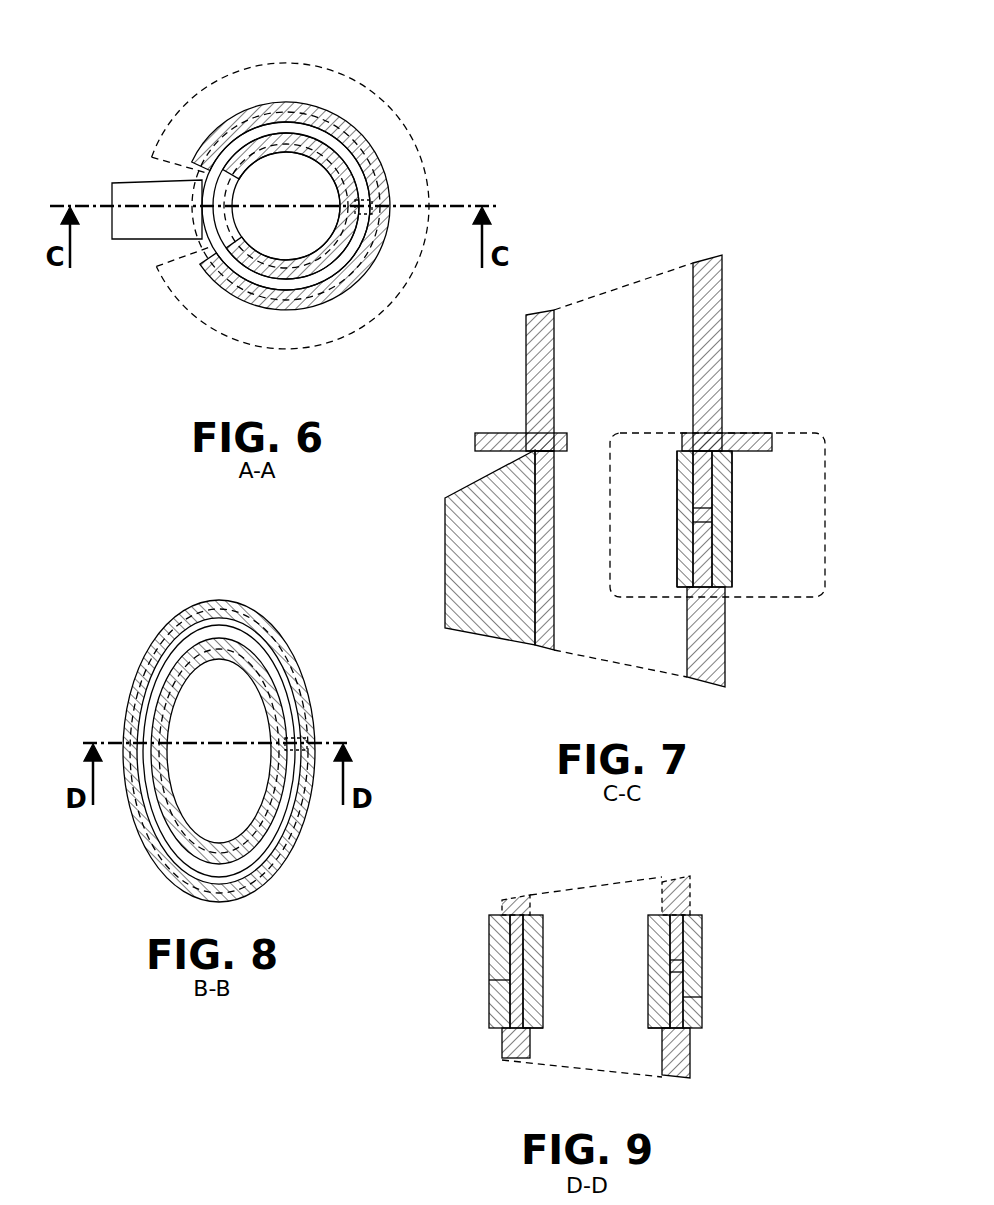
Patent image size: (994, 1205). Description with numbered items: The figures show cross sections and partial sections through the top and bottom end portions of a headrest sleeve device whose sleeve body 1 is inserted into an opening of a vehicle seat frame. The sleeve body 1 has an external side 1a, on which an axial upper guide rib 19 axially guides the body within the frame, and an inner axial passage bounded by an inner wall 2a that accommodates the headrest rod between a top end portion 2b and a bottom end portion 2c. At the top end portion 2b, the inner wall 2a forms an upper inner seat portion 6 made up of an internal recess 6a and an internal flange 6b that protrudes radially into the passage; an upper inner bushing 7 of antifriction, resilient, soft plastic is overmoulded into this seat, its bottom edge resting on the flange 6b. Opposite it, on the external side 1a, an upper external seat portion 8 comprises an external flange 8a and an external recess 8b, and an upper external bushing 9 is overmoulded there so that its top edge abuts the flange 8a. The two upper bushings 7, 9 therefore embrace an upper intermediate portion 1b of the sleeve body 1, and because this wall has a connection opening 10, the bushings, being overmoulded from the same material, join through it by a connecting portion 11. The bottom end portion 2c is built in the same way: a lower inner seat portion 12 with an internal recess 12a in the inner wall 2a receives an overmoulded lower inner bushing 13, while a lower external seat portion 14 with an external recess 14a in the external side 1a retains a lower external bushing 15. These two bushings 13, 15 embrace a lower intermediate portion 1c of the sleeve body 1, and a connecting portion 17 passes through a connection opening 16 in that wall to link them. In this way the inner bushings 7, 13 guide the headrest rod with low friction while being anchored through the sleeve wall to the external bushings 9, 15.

In FIG. 7, the sleeve body 1 is at (712, 648).
In FIG. 9, the sleeve body 1 is at (680, 888).
In FIG. 6, the external side 1a is at (208, 152).
In FIG. 7, the external side 1a is at (522, 382).
In FIG. 8, the external side 1a is at (150, 662).
In FIG. 9, the external side 1a is at (496, 901).
In FIG. 6, the upper intermediate portion 1b is at (317, 133).
In FIG. 7, the upper intermediate portion 1b is at (703, 545).
In FIG. 8, the lower intermediate portion 1c is at (292, 717).
In FIG. 9, the lower intermediate portion 1c is at (515, 942).
In FIG. 7, the inner wall 2a is at (556, 392).
In FIG. 8, the inner wall 2a is at (273, 798).
In FIG. 9, the inner wall 2a is at (534, 895).
In FIG. 6, the top end portion 2b is at (272, 227).
In FIG. 7, the top end portion 2b is at (622, 308).
In FIG. 8, the bottom end portion 2c is at (208, 778).
In FIG. 9, the bottom end portion 2c is at (596, 899).
In FIG. 7, the upper inner seat portion 6 is at (610, 437).
In FIG. 6, the internal recess 6a is at (347, 233).
In FIG. 7, the internal recess 6a is at (683, 474).
In FIG. 6, the internal flange 6b is at (250, 150).
In FIG. 7, the internal flange 6b is at (560, 435).
In FIG. 6, the upper inner bushing 7 is at (288, 270).
In FIG. 7, the upper inner bushing 7 is at (683, 552).
In FIG. 7, the upper external seat portion 8 is at (825, 437).
In FIG. 6, the external flange 8a is at (287, 74).
In FIG. 7, the external flange 8a is at (492, 432).
In FIG. 6, the external recess 8b is at (338, 280).
In FIG. 7, the external recess 8b is at (707, 492).
In FIG. 6, the upper external bushing 9 is at (370, 155).
In FIG. 7, the upper external bushing 9 is at (725, 570).
In FIG. 6, the connection opening 10 is at (368, 202).
In FIG. 7, the connection opening 10 is at (707, 520).
In FIG. 7, the connecting portion 11 is at (707, 510).
In FIG. 9, the lower inner seat portion 12 is at (523, 980).
In FIG. 8, the internal recess 12a is at (153, 722).
In FIG. 8, the lower inner bushing 13 is at (228, 655).
In FIG. 9, the lower inner bushing 13 is at (535, 1015).
In FIG. 9, the lower external seat portion 14 is at (417, 917).
In FIG. 8, the external recess 14a is at (278, 667).
In FIG. 9, the external recess 14a is at (512, 963).
In FIG. 8, the lower external bushing 15 is at (202, 612).
In FIG. 9, the lower external bushing 15 is at (493, 997).
In FIG. 9, the connection opening 16 is at (670, 958).
In FIG. 8, the connecting portion 17 is at (293, 739).
In FIG. 9, the connecting portion 17 is at (670, 971).
In FIG. 6, the axial upper guide rib 19 is at (130, 230).
In FIG. 7, the axial upper guide rib 19 is at (473, 600).